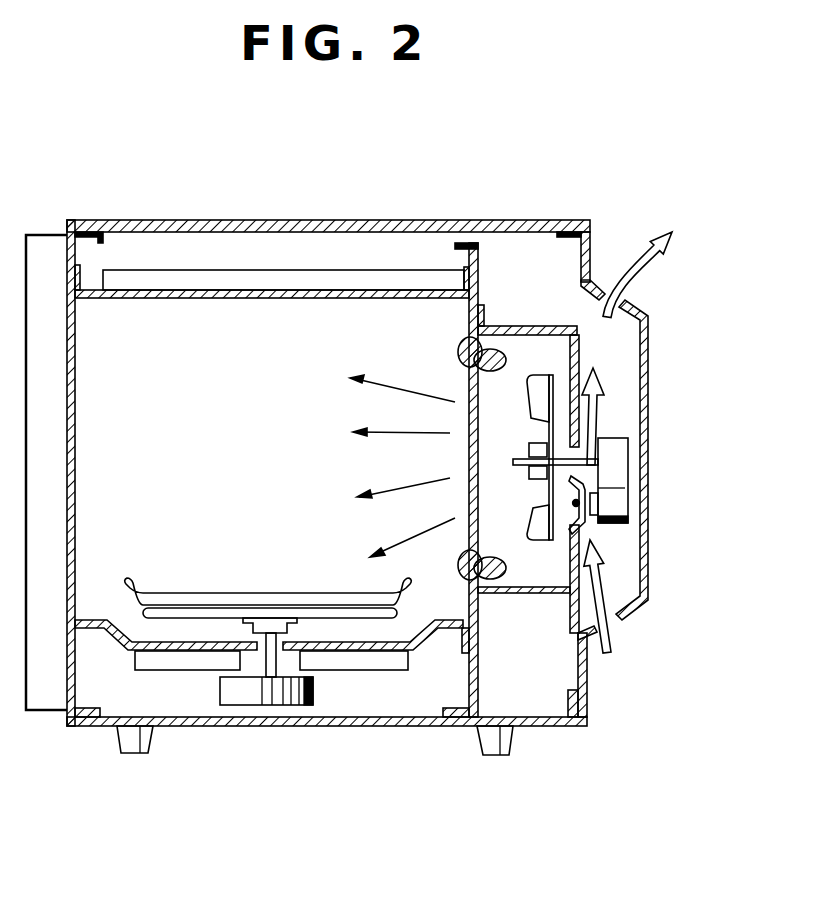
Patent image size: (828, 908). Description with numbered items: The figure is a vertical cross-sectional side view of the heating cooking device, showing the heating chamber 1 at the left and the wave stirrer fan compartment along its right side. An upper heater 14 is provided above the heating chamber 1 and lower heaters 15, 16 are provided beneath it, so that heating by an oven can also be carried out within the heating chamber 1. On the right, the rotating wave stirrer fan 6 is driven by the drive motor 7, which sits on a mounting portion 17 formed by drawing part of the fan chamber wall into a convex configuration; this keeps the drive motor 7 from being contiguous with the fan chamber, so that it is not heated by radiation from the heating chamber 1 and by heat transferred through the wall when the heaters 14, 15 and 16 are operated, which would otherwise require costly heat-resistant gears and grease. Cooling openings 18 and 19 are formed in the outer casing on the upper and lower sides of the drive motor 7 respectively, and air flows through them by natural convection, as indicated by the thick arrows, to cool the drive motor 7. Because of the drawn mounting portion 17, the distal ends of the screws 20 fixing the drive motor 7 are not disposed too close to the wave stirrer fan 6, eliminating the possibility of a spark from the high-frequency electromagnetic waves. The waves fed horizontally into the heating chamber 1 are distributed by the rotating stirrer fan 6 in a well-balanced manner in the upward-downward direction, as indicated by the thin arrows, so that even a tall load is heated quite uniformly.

The heating chamber 1 is at (117, 323).
The upper heater 14 is at (271, 277).
The cooling opening 18 is at (604, 300).
The drive motor 7 is at (620, 456).
The screws 20 is at (603, 503).
The mounting portion 17 is at (588, 527).
The wave stirrer fan 6 is at (540, 541).
The cooling opening 19 is at (612, 622).
The lower heater 15 is at (186, 660).
The lower heater 16 is at (372, 662).